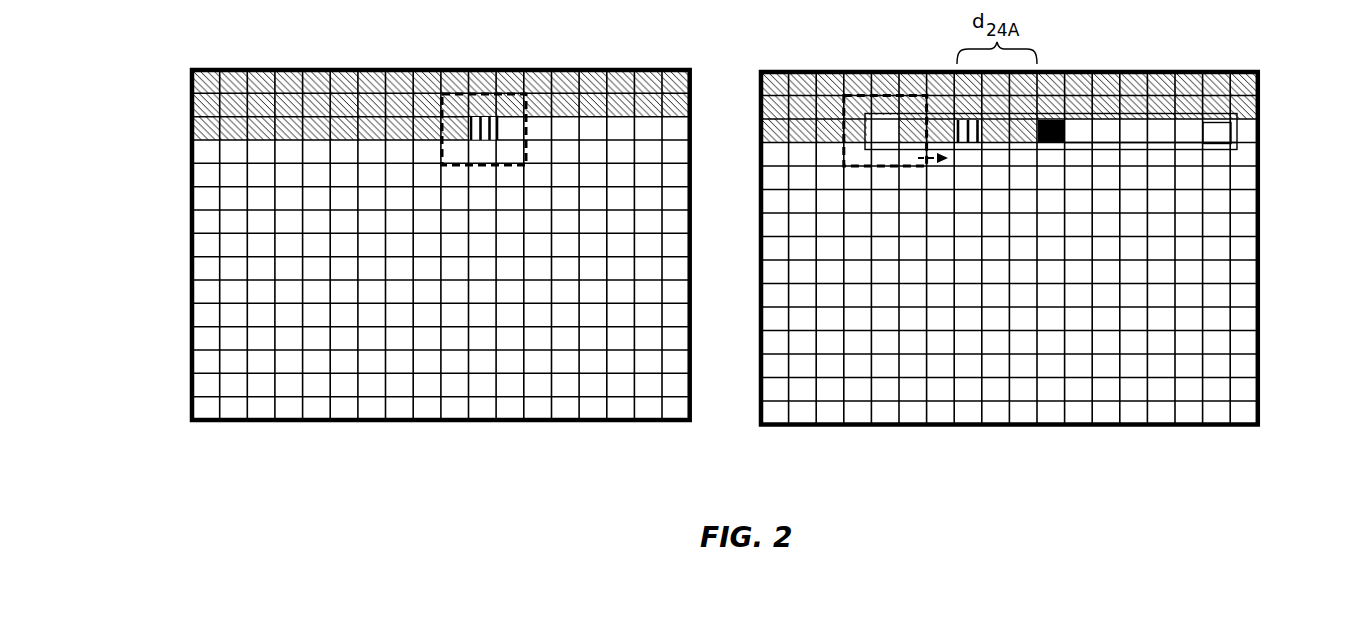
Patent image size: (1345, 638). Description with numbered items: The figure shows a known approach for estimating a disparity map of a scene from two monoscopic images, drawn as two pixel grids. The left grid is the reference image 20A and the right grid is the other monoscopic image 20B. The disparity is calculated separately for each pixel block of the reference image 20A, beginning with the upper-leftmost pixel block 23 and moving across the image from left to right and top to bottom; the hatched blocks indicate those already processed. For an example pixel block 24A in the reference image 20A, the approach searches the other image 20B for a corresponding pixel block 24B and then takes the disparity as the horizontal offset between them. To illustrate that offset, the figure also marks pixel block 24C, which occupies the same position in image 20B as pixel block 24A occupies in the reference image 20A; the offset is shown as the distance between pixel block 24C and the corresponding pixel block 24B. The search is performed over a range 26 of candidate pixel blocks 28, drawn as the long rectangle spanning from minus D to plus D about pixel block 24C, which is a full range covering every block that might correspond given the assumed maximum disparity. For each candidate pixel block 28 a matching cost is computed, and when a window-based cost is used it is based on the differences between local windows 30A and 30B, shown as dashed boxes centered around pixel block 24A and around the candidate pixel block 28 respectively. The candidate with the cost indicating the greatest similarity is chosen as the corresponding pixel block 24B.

The reference image 20A is at (192, 352).
The other monoscopic image 20B is at (1260, 367).
The upper-leftmost pixel block 23 is at (209, 78).
The pixel block 24A is at (487, 120).
The corresponding pixel block 24B is at (962, 122).
The pixel block 24C is at (1053, 122).
The range of candidate pixel blocks 26 is at (1162, 117).
The candidate pixel block 28 is at (1163, 138).
The local window 30A is at (441, 105).
The local window 30B is at (843, 106).